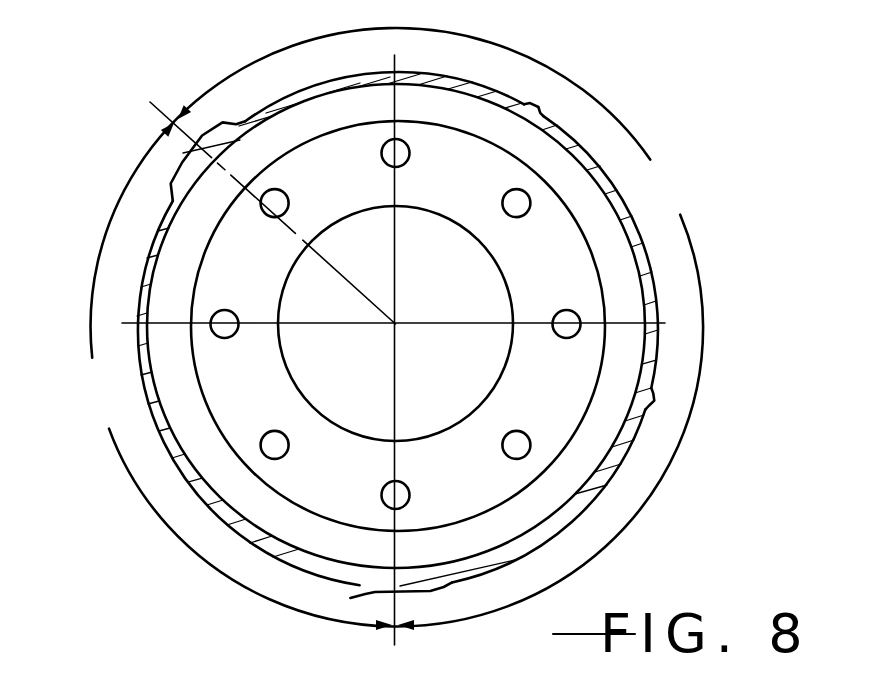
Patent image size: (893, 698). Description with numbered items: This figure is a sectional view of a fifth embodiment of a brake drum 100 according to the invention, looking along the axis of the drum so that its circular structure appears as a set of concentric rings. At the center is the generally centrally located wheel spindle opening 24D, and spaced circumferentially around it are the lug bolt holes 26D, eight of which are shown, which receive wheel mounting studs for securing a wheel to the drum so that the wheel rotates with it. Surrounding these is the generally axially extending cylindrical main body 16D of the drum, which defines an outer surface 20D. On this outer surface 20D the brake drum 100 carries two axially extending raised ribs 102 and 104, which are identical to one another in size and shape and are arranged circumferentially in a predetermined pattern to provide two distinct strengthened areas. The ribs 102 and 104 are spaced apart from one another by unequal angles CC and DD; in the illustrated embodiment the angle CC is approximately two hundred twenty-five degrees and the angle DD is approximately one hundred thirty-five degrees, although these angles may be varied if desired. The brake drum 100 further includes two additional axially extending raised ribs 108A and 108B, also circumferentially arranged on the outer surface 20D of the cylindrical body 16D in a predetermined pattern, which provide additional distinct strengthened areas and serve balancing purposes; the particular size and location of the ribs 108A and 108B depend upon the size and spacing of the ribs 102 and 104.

The brake drum 100 is at (660, 113).
The axially extending raised rib 102 is at (200, 127).
The axially extending raised rib 104 is at (350, 598).
The axially extending raised rib 108A is at (537, 104).
The axially extending raised rib 108B is at (657, 400).
The cylindrical main body 16D is at (647, 250).
The outer surface 20D is at (657, 297).
The wheel spindle opening 24D is at (472, 237).
The lug bolt holes 26D is at (382, 152).
The angle CC is at (541, 350).
The angle DD is at (369, 368).